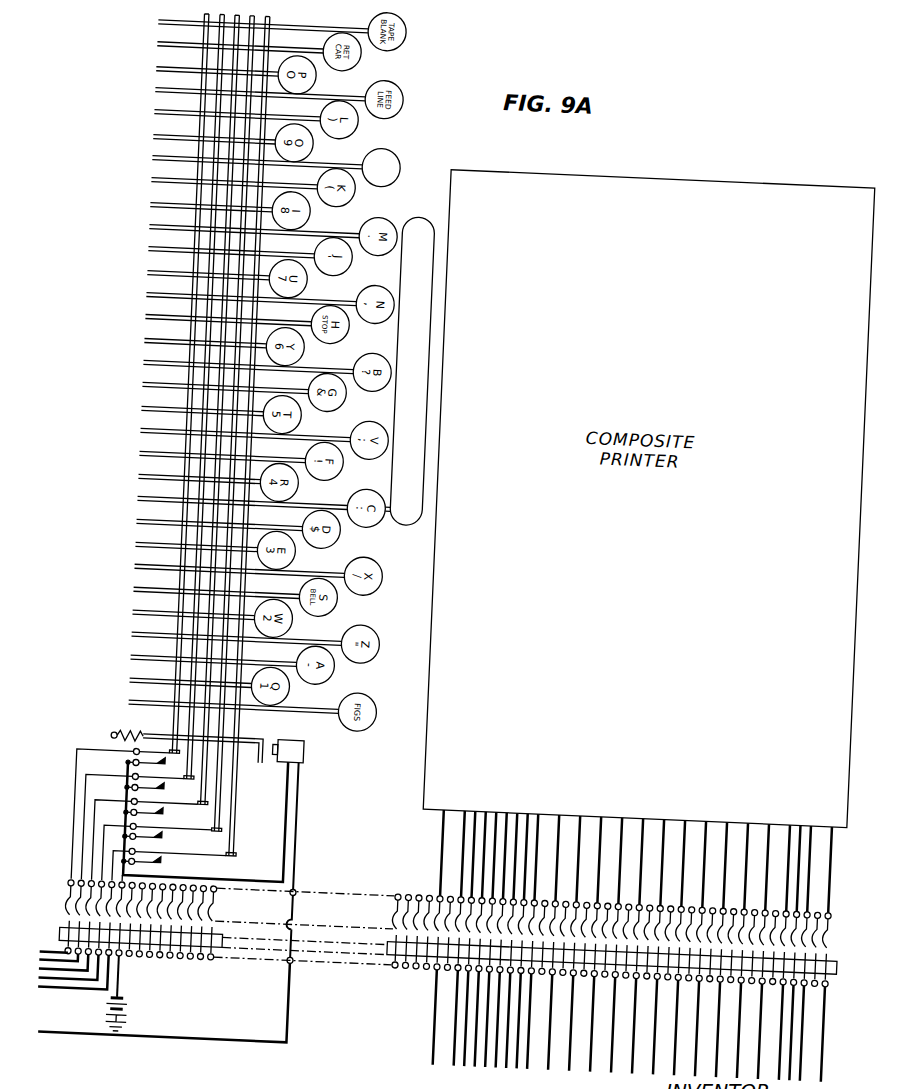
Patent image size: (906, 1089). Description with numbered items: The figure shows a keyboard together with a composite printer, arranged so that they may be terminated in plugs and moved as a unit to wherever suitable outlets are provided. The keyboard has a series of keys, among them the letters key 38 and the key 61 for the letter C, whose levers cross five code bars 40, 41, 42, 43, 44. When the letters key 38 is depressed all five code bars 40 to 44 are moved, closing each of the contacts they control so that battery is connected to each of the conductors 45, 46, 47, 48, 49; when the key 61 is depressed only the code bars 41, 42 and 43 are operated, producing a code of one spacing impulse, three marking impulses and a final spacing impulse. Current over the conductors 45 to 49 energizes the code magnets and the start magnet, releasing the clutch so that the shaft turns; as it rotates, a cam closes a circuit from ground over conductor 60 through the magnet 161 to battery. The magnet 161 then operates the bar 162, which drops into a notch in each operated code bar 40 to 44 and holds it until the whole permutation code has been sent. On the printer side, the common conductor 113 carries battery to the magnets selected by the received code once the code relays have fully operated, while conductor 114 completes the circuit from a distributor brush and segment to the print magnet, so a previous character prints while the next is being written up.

The key 38 is at (379, 158).
The code bar 40 is at (182, 25).
The code bar 41 is at (201, 20).
The code bar 42 is at (214, 25).
The code bar 43 is at (230, 25).
The code bar 44 is at (245, 25).
The conductor 45 is at (66, 978).
The conductor 46 is at (88, 987).
The conductor 47 is at (108, 996).
The conductor 48 is at (140, 984).
The conductor 49 is at (131, 993).
The conductor 60 is at (208, 1049).
The key 61 is at (372, 524).
The common conductor 113 is at (822, 1020).
The conductor 114 is at (455, 1036).
The magnet 161 is at (313, 752).
The bar 162 is at (268, 731).